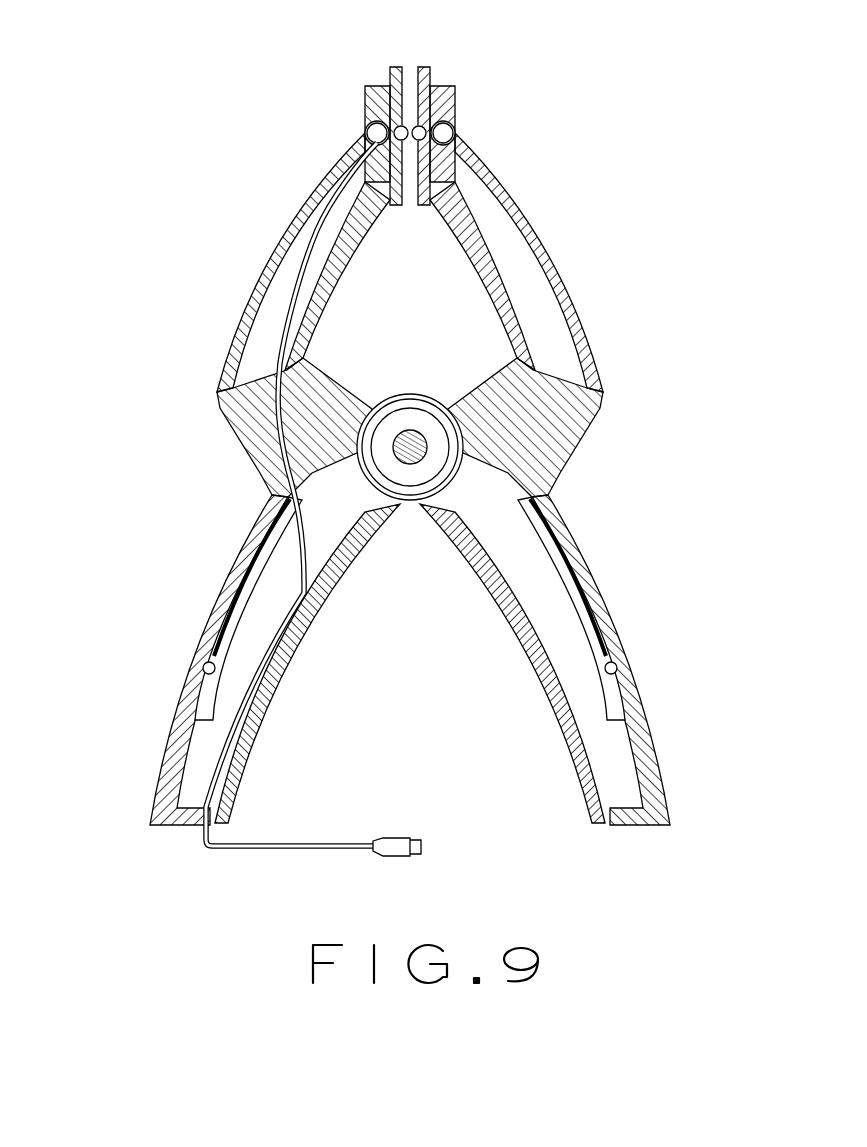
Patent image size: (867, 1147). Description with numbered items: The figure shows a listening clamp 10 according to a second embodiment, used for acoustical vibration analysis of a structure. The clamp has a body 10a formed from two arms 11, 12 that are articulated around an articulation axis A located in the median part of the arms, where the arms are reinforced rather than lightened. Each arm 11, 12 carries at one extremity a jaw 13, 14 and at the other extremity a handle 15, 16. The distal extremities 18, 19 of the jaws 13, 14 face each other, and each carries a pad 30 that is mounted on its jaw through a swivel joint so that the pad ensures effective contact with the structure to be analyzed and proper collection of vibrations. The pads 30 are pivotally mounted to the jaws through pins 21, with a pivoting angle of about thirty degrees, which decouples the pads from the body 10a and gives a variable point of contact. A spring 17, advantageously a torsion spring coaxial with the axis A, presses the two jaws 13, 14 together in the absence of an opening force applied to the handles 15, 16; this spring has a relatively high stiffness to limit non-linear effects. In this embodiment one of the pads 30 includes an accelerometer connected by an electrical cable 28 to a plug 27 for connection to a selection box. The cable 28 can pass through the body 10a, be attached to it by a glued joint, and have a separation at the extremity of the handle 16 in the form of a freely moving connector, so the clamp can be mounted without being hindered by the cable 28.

The listening clamp 10 is at (389, 428).
The body 10a is at (588, 460).
The arm 11 is at (543, 262).
The arm 12 is at (297, 261).
The jaw 13 is at (570, 264).
The jaw 14 is at (292, 206).
The handle 15 is at (672, 755).
The handle 16 is at (126, 780).
The spring 17 is at (228, 658).
The distal extremity 18 is at (456, 80).
The distal extremity 19 is at (372, 80).
The pin 21 is at (376, 133).
The plug 27 is at (397, 836).
The electrical cable 28 is at (312, 262).
The pad 30 is at (399, 64).
The articulation axis A is at (413, 458).